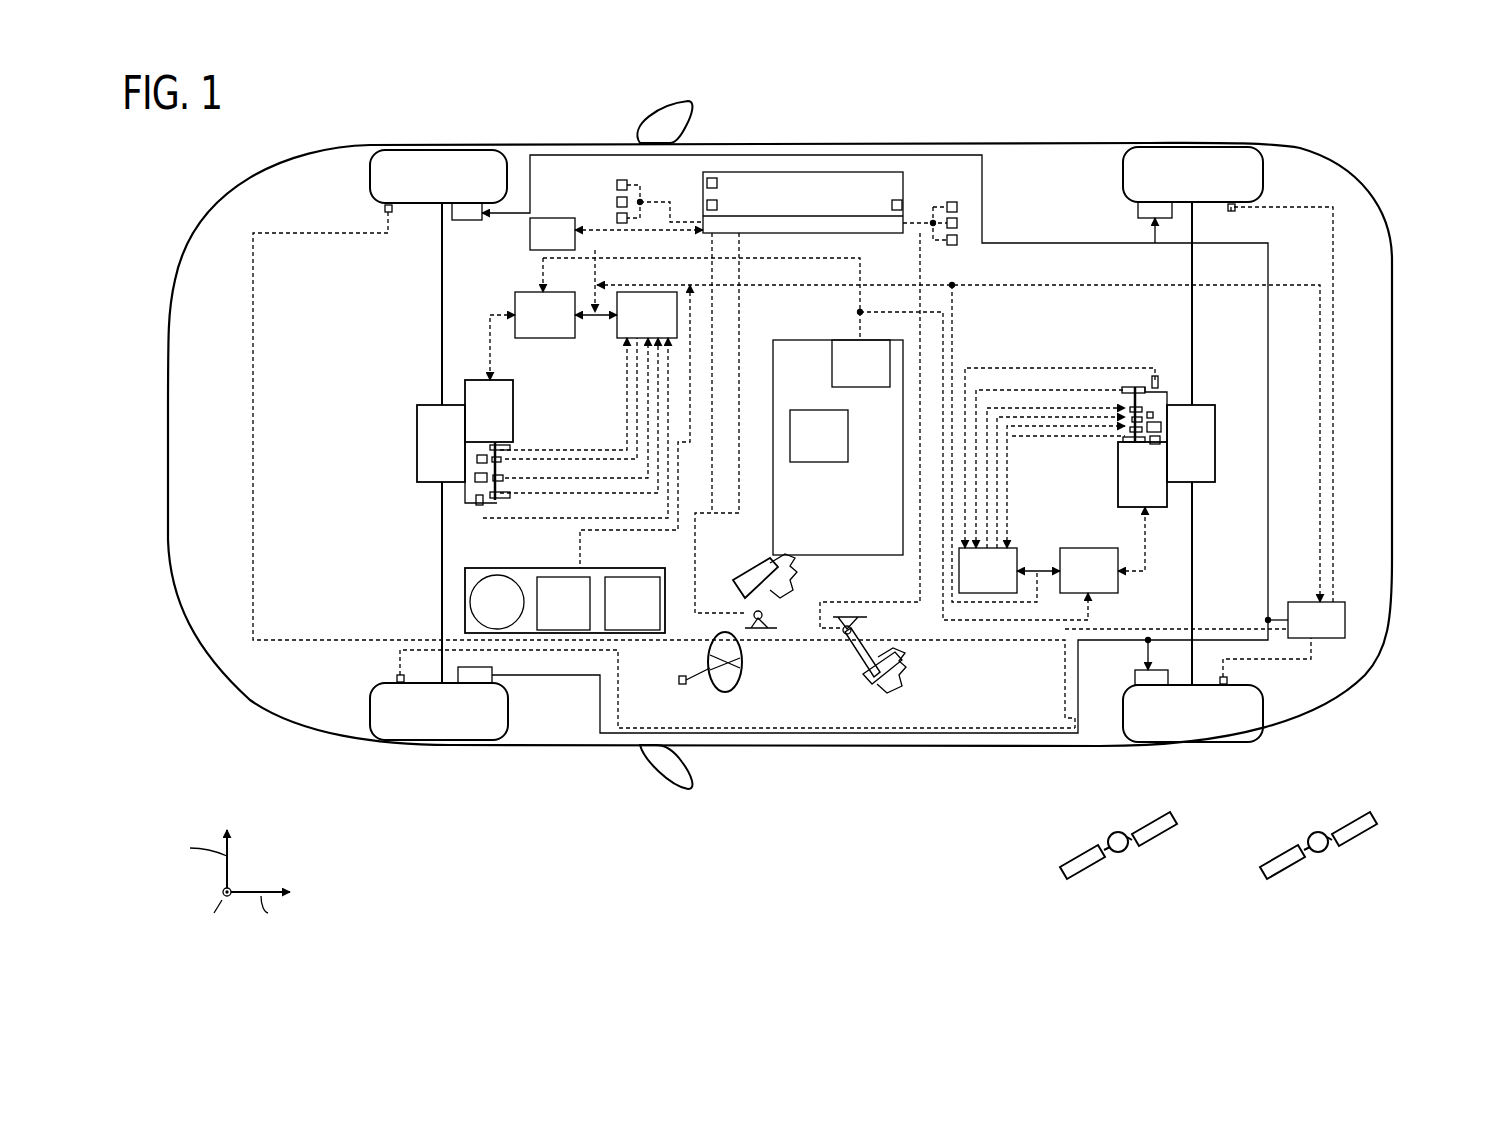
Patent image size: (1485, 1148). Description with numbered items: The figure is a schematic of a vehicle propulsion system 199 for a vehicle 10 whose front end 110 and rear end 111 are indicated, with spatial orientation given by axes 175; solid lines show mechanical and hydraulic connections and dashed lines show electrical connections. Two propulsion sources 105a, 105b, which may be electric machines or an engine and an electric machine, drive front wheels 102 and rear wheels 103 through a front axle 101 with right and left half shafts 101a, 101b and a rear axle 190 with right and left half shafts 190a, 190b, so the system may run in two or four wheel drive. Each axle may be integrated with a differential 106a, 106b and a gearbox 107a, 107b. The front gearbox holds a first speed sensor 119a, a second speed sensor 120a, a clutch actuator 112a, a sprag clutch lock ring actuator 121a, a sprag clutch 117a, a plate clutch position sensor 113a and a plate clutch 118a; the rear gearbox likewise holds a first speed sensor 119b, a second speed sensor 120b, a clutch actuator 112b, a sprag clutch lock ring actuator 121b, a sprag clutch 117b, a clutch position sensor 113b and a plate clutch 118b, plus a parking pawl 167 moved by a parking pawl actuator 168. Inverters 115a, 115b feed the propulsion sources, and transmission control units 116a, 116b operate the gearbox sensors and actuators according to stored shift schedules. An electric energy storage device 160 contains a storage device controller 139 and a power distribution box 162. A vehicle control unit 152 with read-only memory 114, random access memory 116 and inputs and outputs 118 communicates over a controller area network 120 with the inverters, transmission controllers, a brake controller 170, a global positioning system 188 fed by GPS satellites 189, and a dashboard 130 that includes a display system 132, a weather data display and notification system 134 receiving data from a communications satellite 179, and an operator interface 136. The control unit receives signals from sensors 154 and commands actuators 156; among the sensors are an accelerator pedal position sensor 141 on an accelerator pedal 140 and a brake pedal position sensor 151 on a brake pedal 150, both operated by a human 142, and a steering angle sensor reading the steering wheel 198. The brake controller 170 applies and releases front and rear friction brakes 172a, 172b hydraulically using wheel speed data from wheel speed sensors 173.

The vehicle 10 is at (1010, 143).
The front axle 101 is at (400, 490).
The right half shaft 101a is at (442, 255).
The left half shaft 101b is at (442, 607).
The front wheels 102 is at (440, 152).
The rear wheels 103 is at (1185, 147).
The propulsion source 105a is at (507, 384).
The propulsion source 105b is at (1124, 485).
The differential 106a is at (432, 412).
The differential 106b is at (1210, 410).
The gearbox 107a is at (478, 505).
The gearbox 107b is at (1160, 390).
The front end 110 is at (138, 242).
The rear end 111 is at (1420, 182).
The clutch actuator 112a is at (505, 458).
The clutch actuator 112b is at (1125, 421).
The plate clutch position sensor 113a is at (488, 506).
The clutch position sensor 113b is at (1154, 378).
The read-only memory 114 is at (707, 181).
The electric power inverter 115a is at (545, 315).
The electric power inverter 115b is at (1089, 570).
The random access memory 116 is at (707, 204).
The transmission control unit 116a is at (647, 315).
The transmission control unit 116b is at (988, 570).
The sprag clutch 117a is at (477, 458).
The sprag clutch 117b is at (1162, 441).
The inputs and outputs 118 is at (850, 224).
The plate clutch 118a is at (475, 477).
The plate clutch 118b is at (1162, 430).
The first speed sensor 119a is at (512, 412).
The first speed sensor 119b is at (1125, 437).
The controller area network 120 is at (602, 278).
The second speed sensor 120a is at (512, 494).
The second speed sensor 120b is at (1125, 388).
The sprag clutch lock ring actuator 121a is at (507, 478).
The sprag clutch lock ring actuator 121b is at (1125, 407).
The dashboard 130 is at (565, 588).
The display system 132 is at (497, 602).
The weather data display and notification system 134 is at (563, 603).
The operator interface 136 is at (632, 603).
The electric energy storage device controller 139 is at (819, 436).
The accelerator pedal 140 is at (756, 589).
The accelerator pedal position sensor 141 is at (767, 616).
The human 142 is at (772, 565).
The brake pedal 150 is at (848, 659).
The brake pedal position sensor 151 is at (845, 634).
The vehicle control unit 152 is at (803, 202).
The sensors 154 is at (612, 207).
The actuators 156 is at (960, 244).
The electric energy storage device 160 is at (900, 204).
The electrical power distribution box 162 is at (861, 363).
The parking pawl 167 is at (1162, 421).
The parking pawl actuator 168 is at (1145, 412).
The brake controller 170 is at (1316, 620).
The front friction brakes 172a is at (462, 220).
The rear friction brakes 172b is at (1138, 214).
The wheel speed sensors 173 is at (385, 208).
The axes 175 is at (252, 840).
The communications satellite 179 is at (1158, 828).
The global positioning system 188 is at (616, 265).
The GPS satellites 189 is at (1358, 828).
The rear axle 190 is at (1205, 503).
The right half shaft 190a is at (1192, 337).
The left half shaft 190b is at (1192, 595).
The steering wheel 198 is at (740, 685).
The vehicle propulsion system 199 is at (679, 680).